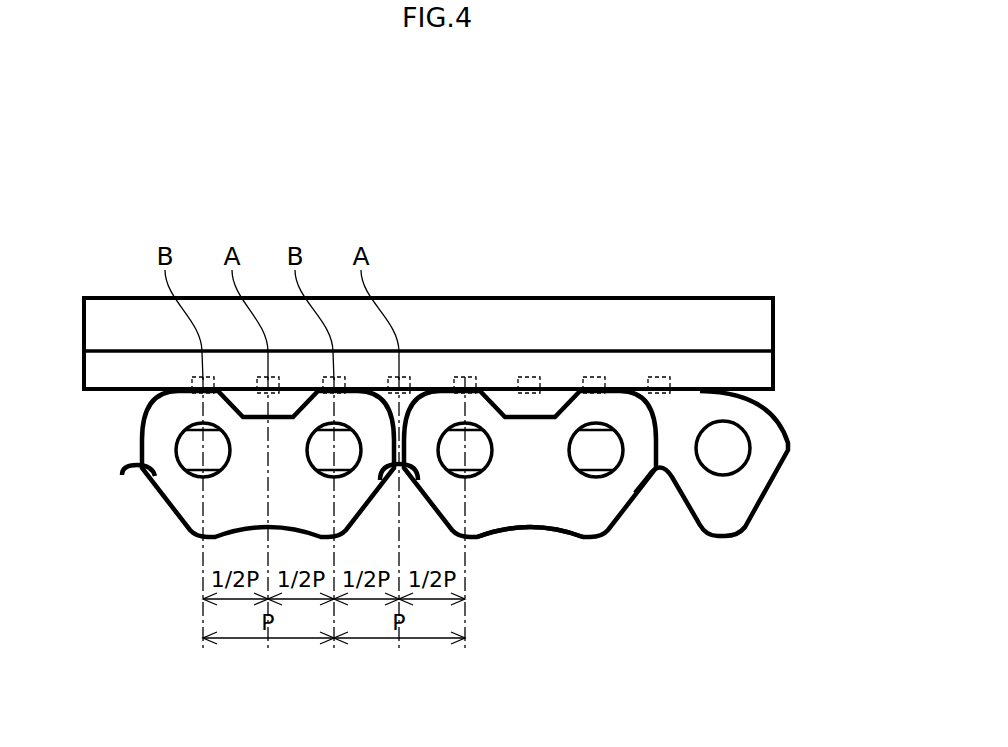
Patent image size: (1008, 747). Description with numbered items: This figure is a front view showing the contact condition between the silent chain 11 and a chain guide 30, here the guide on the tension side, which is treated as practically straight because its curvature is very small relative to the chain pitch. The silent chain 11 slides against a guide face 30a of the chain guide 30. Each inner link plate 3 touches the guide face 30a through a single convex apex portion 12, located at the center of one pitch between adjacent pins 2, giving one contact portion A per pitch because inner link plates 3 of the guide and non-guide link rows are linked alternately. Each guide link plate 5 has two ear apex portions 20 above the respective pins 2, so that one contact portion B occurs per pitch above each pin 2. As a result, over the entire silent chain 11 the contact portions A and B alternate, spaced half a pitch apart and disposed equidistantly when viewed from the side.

The silent chain 11 is at (798, 437).
The pin 2 is at (187, 458).
The inner link plate 3 is at (742, 515).
The guide link plate 5 is at (535, 517).
The convex apex portion 12 is at (662, 383).
The ear apex portion 20 is at (465, 388).
The chain guide 30 is at (100, 318).
The guide face 30a is at (117, 391).